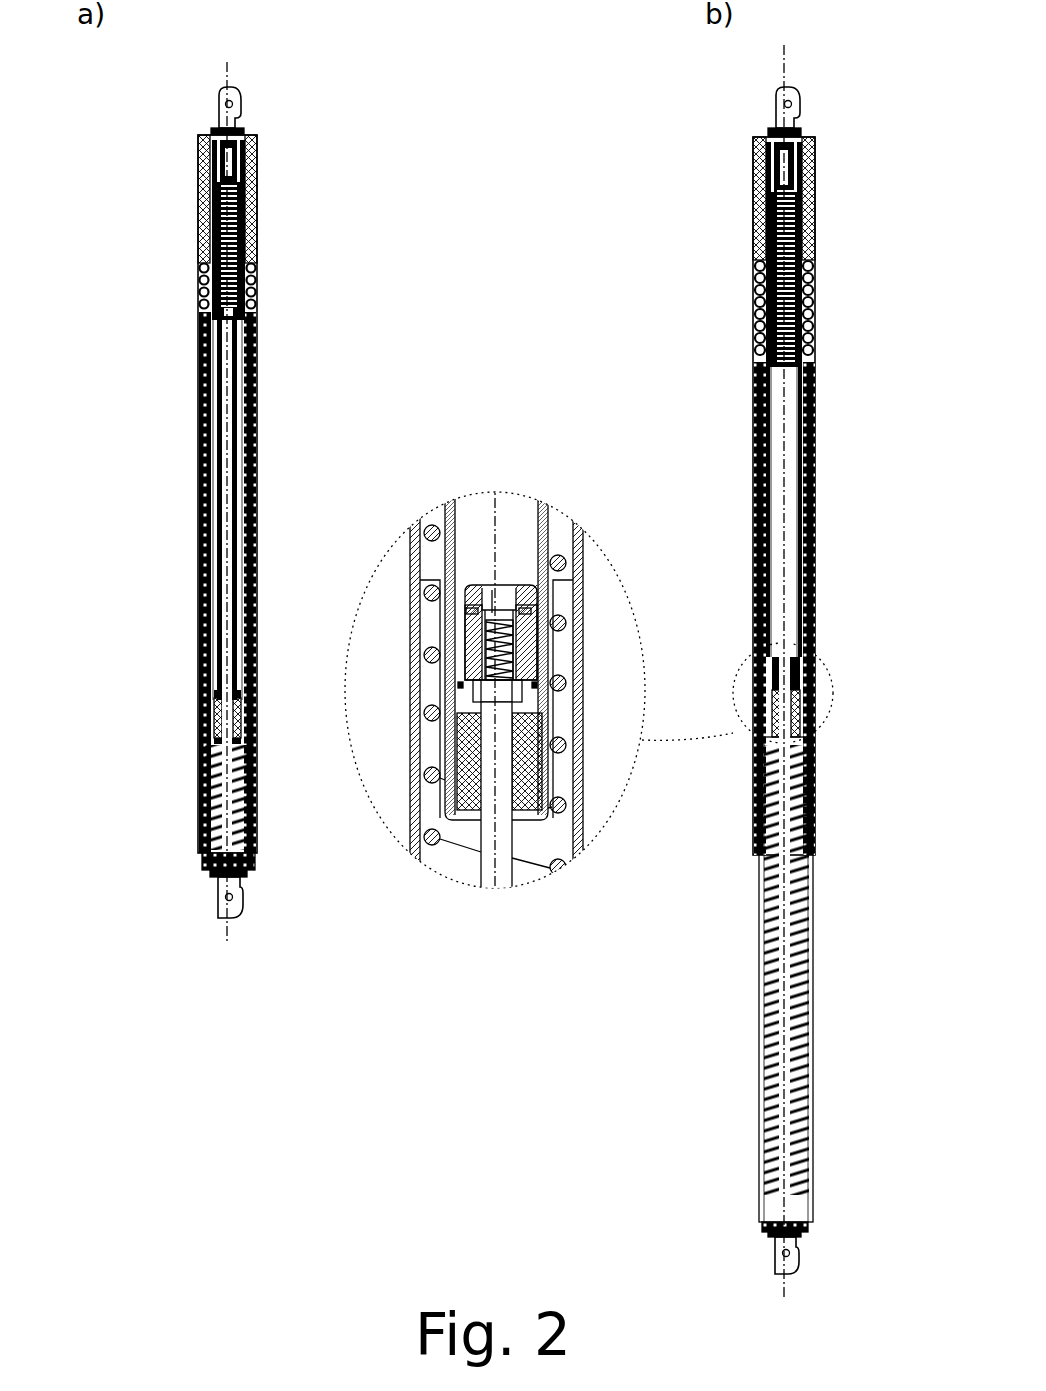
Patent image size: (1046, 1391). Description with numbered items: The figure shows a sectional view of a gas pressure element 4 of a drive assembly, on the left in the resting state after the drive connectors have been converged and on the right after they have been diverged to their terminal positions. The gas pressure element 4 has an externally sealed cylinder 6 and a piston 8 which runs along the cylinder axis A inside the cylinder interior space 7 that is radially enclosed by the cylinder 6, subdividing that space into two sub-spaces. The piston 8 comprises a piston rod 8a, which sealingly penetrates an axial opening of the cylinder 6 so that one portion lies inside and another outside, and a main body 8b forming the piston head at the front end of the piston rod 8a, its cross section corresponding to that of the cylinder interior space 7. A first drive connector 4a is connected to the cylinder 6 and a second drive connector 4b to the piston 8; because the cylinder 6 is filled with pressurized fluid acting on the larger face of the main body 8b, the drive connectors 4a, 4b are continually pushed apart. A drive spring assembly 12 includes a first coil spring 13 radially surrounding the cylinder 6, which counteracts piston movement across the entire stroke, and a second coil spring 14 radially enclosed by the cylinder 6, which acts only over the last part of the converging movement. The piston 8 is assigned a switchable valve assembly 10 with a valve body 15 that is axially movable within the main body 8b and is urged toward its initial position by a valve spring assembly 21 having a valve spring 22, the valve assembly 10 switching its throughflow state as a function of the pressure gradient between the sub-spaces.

The gas pressure element 4 is at (340, 165).
The first drive connector 4a is at (218, 97).
The second drive connector 4b is at (222, 908).
The cylinder 6 is at (190, 178).
The cylinder interior space 7 is at (214, 421).
The piston 8 is at (742, 1207).
The piston rod 8a is at (223, 637).
The main body 8b is at (553, 647).
The switchable valve assembly 10 is at (510, 573).
The drive spring assembly 12 is at (366, 268).
The first coil spring 13 is at (252, 288).
The second coil spring 14 is at (248, 240).
The valve body 15 is at (493, 597).
The valve spring assembly 21 is at (487, 650).
The valve spring 22 is at (429, 584).
The cylinder axis A is at (226, 488).